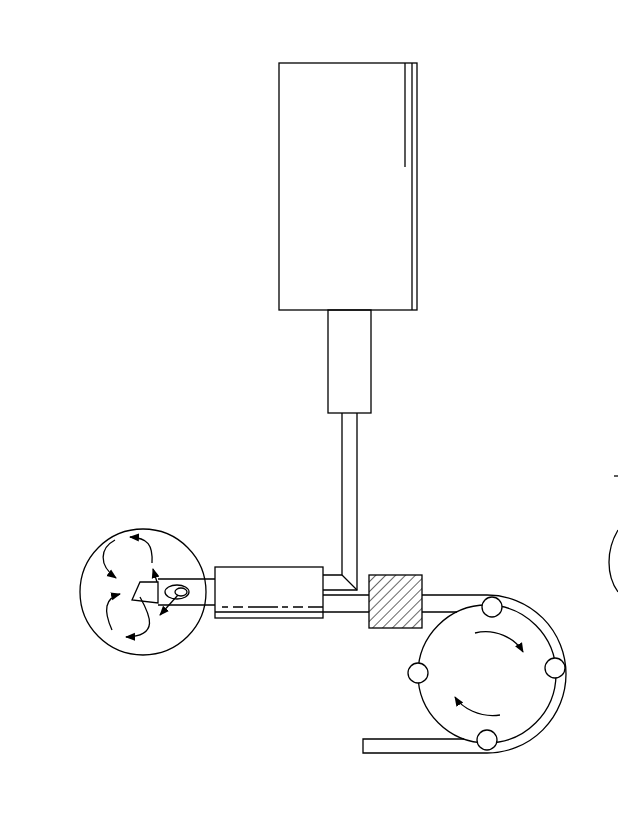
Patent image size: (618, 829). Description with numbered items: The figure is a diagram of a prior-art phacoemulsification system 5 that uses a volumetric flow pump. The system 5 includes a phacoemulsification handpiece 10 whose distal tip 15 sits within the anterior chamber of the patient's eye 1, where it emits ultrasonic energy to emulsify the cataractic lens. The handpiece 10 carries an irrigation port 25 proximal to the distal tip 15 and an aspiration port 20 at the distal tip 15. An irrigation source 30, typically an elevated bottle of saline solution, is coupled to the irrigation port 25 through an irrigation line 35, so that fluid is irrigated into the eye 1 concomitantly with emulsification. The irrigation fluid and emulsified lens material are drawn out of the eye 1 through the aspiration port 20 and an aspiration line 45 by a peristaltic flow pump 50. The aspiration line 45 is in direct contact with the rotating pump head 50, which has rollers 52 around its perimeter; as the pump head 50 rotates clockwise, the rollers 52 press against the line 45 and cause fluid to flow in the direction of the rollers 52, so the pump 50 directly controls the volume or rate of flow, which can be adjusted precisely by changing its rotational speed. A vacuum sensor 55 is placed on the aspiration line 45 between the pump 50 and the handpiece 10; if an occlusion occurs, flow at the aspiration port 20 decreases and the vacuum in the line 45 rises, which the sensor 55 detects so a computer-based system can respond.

The phacoemulsification system 5 is at (240, 59).
The phacoemulsification handpiece 10 is at (150, 455).
The eye 1 is at (137, 527).
The distal tip 15 is at (141, 598).
The aspiration port 20 is at (112, 635).
The irrigation port 25 is at (178, 596).
The irrigation source 30 is at (405, 173).
The irrigation line 35 is at (357, 452).
The aspiration line 45 is at (340, 612).
The peristaltic flow pump 50 is at (518, 627).
The rollers 52 is at (565, 672).
The vacuum sensor 55 is at (400, 575).